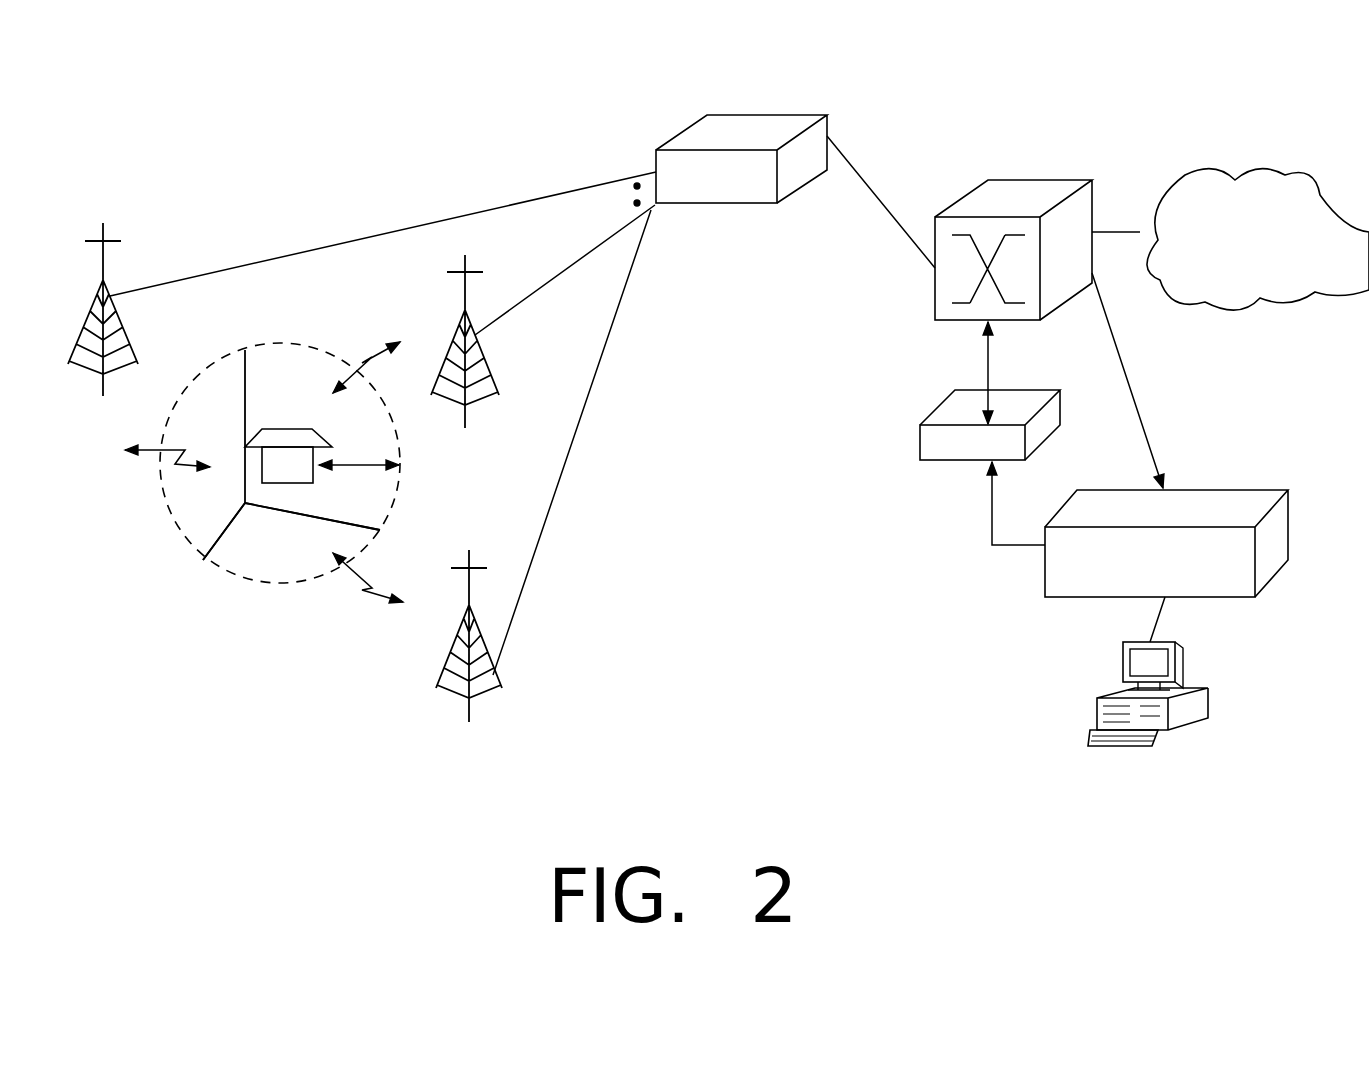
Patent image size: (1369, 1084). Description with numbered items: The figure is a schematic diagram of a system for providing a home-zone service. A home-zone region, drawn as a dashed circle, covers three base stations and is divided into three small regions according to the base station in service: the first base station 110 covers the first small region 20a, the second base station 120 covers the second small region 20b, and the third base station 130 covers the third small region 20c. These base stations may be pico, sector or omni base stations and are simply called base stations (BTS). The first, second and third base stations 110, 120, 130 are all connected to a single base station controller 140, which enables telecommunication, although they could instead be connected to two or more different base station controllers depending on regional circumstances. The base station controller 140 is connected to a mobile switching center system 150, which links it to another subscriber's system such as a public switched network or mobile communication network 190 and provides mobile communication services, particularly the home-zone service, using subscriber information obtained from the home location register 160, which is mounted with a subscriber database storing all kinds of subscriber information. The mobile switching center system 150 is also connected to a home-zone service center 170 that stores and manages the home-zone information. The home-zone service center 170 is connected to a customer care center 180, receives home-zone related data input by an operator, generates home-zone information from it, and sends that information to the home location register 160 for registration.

The first base station 110 is at (128, 327).
The second base station 120 is at (500, 675).
The third base station 130 is at (467, 312).
The base station controller 140 is at (781, 90).
The mobile switching center system 150 is at (1033, 180).
The home location register 160 is at (920, 442).
The home-zone service center 170 is at (1285, 465).
The customer care center 180 is at (1183, 660).
The public switched network or mobile communication network 190 is at (1250, 300).
The first small region 20a is at (178, 502).
The second small region 20b is at (270, 565).
The third small region 20c is at (385, 493).